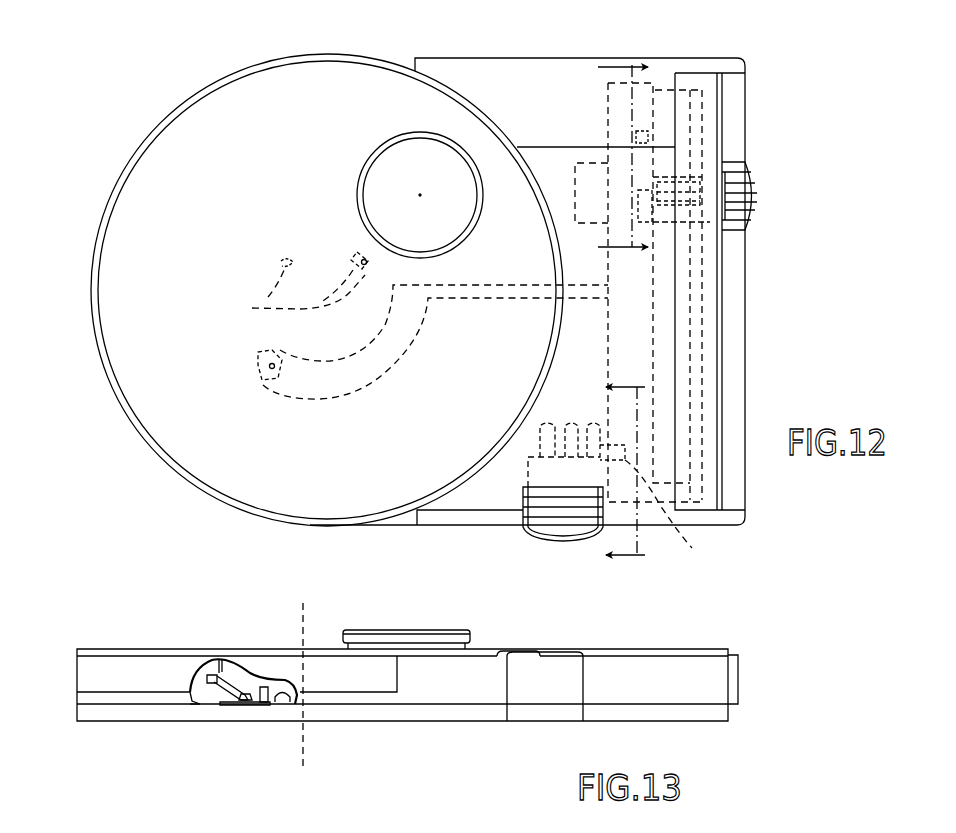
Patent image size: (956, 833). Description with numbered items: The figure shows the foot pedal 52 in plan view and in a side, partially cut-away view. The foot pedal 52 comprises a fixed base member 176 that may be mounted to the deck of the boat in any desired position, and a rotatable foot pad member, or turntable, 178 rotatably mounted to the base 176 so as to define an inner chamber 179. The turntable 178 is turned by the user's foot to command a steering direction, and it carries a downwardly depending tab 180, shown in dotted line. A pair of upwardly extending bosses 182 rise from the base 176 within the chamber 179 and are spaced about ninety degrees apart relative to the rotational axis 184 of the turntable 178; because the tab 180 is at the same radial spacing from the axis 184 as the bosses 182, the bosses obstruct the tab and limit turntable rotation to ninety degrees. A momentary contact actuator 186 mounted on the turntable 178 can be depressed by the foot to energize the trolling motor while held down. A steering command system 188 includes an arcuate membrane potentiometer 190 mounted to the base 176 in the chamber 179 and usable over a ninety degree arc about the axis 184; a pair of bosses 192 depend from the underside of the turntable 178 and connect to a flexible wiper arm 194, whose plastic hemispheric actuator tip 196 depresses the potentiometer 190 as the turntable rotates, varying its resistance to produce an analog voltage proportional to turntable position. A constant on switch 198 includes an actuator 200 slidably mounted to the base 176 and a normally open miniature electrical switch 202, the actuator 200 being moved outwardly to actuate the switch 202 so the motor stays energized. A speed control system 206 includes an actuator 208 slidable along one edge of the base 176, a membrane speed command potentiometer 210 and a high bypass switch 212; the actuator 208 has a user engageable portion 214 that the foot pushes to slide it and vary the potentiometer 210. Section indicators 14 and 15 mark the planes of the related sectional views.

In FIG. 12, the foot pedal 52 is at (623, 42).
In FIG. 13, the foot pedal 52 is at (107, 634).
In FIG. 12, the fixed base member 176 is at (505, 100).
In FIG. 13, the fixed base member 176 is at (463, 713).
In FIG. 12, the rotatable foot pad member 178 is at (233, 72).
In FIG. 13, the rotatable foot pad member 178 is at (137, 649).
In FIG. 13, the inner chamber 179 is at (203, 697).
In FIG. 12, the downwardly depending tab 180 is at (355, 253).
In FIG. 12, the upwardly extending bosses 182 is at (287, 292).
In FIG. 13, the upwardly extending bosses 182 is at (270, 680).
In FIG. 12, the rotational axis 184 is at (322, 290).
In FIG. 13, the rotational axis 184 is at (303, 598).
In FIG. 12, the momentary contact actuator 186 is at (401, 128).
In FIG. 13, the momentary contact actuator 186 is at (433, 630).
In FIG. 13, the steering command system 188 is at (235, 710).
In FIG. 12, the membrane potentiometer 190 is at (340, 398).
In FIG. 13, the membrane potentiometer 190 is at (287, 704).
In FIG. 13, the bosses 192 is at (222, 660).
In FIG. 13, the flexible wiper arm 194 is at (220, 687).
In FIG. 13, the actuator tip 196 is at (240, 710).
In FIG. 12, the constant on switch 198 is at (545, 541).
In FIG. 12, the actuator 200 is at (560, 538).
In FIG. 12, the miniature electrical switch 202 is at (671, 371).
In FIG. 12, the speed control system 206 is at (767, 163).
In FIG. 12, the actuator 208 is at (758, 213).
In FIG. 12, the membrane speed command potentiometer 210 is at (692, 126).
In FIG. 12, the high bypass switch 212 is at (645, 128).
In FIG. 12, the user engageable portion 214 is at (457, 507).
In FIG. 12, the section line 14- 14 is at (607, 470).
In FIG. 12, the section line 15- 15 is at (636, 280).